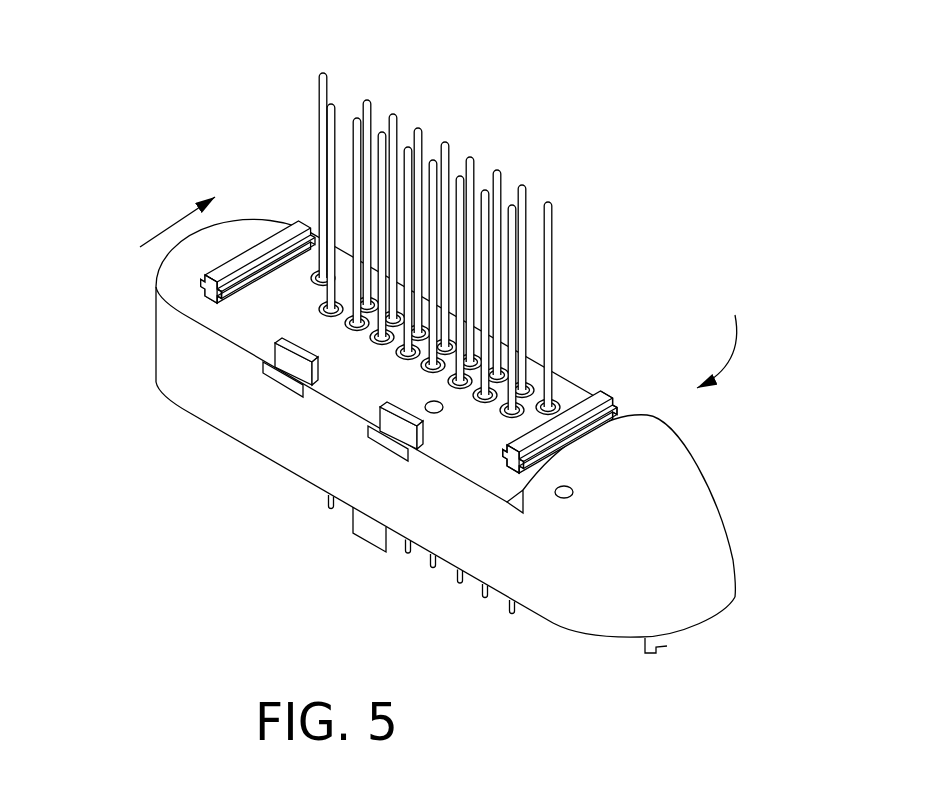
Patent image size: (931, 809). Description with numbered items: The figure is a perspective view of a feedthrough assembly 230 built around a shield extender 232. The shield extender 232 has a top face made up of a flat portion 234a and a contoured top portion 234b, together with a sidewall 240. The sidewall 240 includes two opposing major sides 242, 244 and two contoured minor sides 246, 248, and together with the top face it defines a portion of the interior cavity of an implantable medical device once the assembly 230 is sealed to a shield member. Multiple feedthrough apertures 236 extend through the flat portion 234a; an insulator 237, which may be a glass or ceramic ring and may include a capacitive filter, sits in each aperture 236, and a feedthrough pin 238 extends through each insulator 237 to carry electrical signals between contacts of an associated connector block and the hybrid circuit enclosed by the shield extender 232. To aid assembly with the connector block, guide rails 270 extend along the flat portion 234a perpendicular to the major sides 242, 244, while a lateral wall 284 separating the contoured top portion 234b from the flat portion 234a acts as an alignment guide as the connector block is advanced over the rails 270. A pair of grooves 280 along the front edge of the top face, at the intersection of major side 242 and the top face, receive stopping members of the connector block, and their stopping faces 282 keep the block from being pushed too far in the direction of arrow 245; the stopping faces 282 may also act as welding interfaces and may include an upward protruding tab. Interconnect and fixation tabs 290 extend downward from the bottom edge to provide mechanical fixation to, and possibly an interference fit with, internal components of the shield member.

The feedthrough assembly 230 is at (400, 57).
The shield extender 232 is at (439, 453).
The flat portion of top face 234a is at (228, 240).
The contoured top portion 234b is at (633, 453).
The feedthrough apertures 236 is at (590, 396).
The insulator 237 is at (540, 340).
The feedthrough pin 238 is at (553, 262).
The sidewall 240 is at (553, 598).
The major side 242 is at (208, 428).
The major side 244 is at (720, 339).
The arrow 245 is at (192, 208).
The contoured minor side 246 is at (687, 580).
The contoured minor side 248 is at (156, 287).
The guide rails 270 is at (210, 297).
The grooves 280 is at (378, 436).
The stopping faces 282 is at (410, 433).
The lateral wall 284 is at (525, 490).
The interconnect and fixation tabs 290 is at (368, 525).